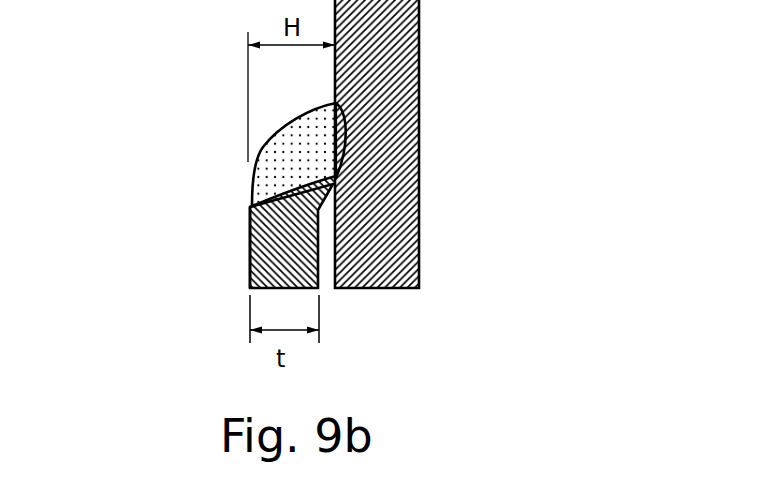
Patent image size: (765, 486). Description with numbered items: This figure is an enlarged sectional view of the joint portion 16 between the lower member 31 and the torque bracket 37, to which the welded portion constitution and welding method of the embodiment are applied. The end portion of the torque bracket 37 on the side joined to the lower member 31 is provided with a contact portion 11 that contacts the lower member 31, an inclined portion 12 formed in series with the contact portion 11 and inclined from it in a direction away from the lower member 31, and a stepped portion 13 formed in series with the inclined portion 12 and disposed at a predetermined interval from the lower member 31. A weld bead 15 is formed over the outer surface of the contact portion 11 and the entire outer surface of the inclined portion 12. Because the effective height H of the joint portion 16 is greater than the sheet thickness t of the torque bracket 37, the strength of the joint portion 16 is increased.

The contact portion 11 is at (333, 148).
The inclined portion 12 is at (280, 193).
The stepped portion 13 is at (250, 237).
The weld bead 15 is at (241, 141).
The joint portion 16 is at (211, 127).
The lower member 31 is at (420, 24).
The torque bracket 37 is at (250, 267).